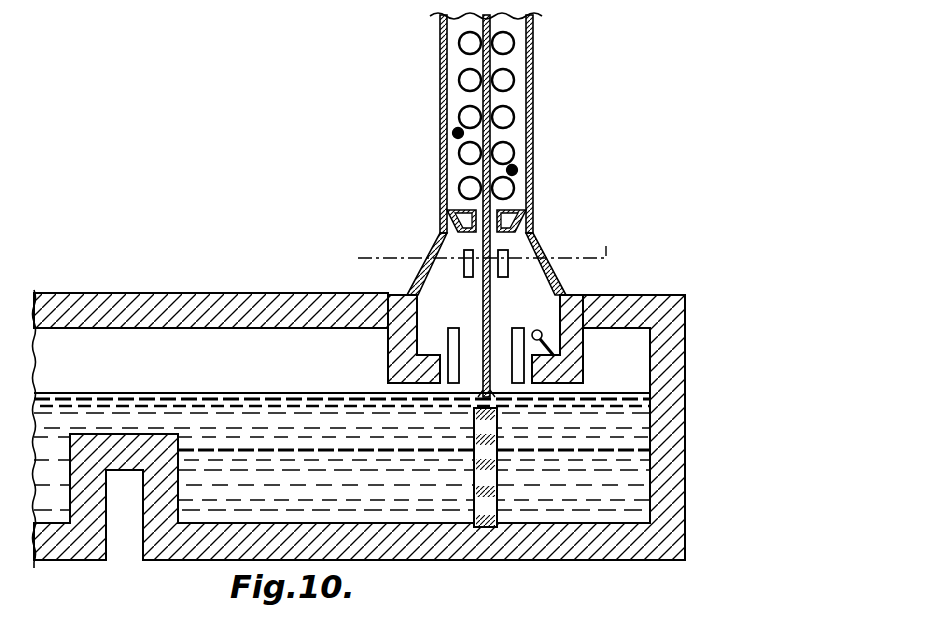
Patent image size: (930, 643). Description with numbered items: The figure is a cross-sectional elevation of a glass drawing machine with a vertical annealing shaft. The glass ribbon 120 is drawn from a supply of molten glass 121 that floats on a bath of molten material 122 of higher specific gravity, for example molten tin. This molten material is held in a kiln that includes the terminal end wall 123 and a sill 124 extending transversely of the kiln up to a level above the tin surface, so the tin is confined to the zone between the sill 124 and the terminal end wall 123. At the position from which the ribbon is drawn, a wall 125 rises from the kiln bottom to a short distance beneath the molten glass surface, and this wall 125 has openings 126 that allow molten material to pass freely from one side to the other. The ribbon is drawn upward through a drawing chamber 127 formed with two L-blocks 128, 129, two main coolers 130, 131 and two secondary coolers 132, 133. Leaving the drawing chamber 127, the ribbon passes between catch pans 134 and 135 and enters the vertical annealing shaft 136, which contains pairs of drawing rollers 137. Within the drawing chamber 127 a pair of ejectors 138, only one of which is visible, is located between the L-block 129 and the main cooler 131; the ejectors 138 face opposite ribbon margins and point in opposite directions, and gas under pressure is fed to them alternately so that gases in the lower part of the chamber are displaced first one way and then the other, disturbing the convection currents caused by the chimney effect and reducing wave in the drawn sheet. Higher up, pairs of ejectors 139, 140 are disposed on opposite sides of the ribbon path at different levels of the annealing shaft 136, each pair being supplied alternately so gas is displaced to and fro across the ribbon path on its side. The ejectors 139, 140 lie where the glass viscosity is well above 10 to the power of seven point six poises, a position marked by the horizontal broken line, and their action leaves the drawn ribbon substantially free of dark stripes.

The section line 10 is at (510, 247).
The glass ribbon 120 is at (482, 291).
The supply of molten glass 121 is at (342, 417).
The bath of molten material 122 is at (342, 480).
The terminal end wall 123 is at (668, 392).
The sill 124 is at (86, 462).
The wall 125 is at (497, 497).
The openings 126 is at (485, 507).
The drawing chamber 127 is at (540, 238).
The L-block 128 is at (406, 302).
The L-block 129 is at (580, 295).
The main cooler 130 is at (440, 347).
The main cooler 131 is at (517, 347).
The secondary cooler 132 is at (462, 257).
The secondary cooler 133 is at (509, 262).
The catch pan 134 is at (462, 222).
The catch pan 135 is at (530, 210).
The vertical annealing shaft 136 is at (541, 94).
The drawing rollers 137 is at (514, 79).
The ejectors 138 is at (536, 330).
The ejectors 139 is at (516, 170).
The ejectors 140 is at (454, 132).